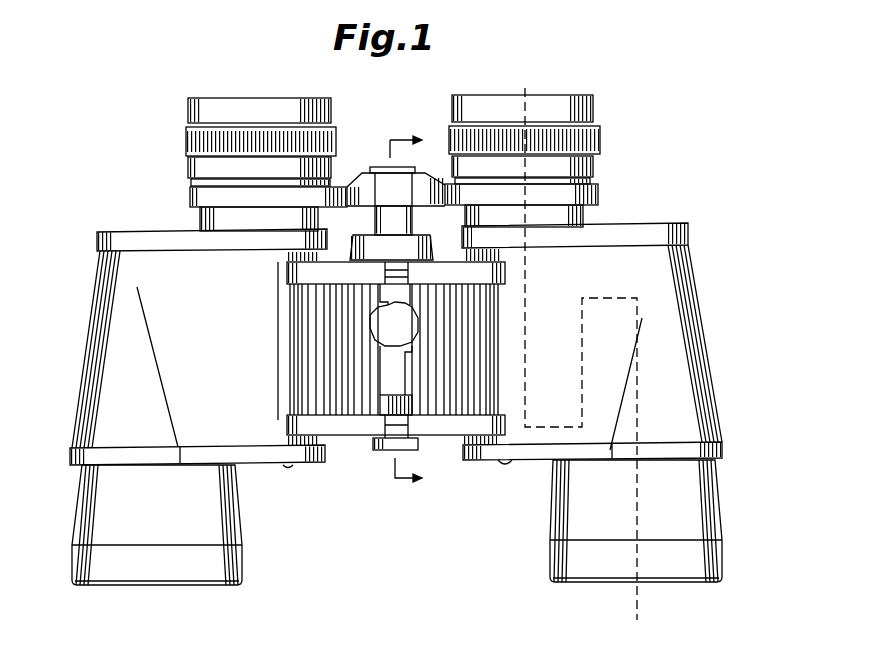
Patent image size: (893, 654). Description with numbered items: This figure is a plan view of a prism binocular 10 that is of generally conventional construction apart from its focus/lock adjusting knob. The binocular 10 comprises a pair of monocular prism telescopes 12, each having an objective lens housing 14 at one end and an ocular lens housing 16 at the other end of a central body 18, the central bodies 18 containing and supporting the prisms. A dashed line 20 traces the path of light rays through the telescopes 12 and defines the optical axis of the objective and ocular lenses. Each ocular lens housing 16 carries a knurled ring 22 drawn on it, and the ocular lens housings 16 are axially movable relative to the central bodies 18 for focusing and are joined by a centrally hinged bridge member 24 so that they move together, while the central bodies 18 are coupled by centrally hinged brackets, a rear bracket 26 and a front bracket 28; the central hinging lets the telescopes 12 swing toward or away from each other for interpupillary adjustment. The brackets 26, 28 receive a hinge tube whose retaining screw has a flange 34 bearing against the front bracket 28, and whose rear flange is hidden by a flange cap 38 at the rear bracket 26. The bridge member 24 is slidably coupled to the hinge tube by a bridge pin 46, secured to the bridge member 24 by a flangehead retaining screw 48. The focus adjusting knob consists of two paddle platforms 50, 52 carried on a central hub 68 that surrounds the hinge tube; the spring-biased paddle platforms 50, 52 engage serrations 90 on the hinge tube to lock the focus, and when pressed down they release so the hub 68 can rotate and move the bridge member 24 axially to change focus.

The prism binocular 10 is at (696, 201).
The monocular prism telescope 12 is at (82, 347).
The objective lens housing 14 is at (72, 556).
The ocular lens housing 16 is at (273, 98).
The central body 18 is at (150, 441).
The dashed line 20 is at (581, 344).
The eyepiece focusing ring 22 is at (186, 142).
The bridge member 24 is at (449, 183).
The rear bracket 26 is at (505, 268).
The front bracket 28 is at (484, 460).
The flange 34 is at (408, 450).
The flange cap 38 is at (406, 261).
The bridge pin 46 is at (412, 218).
The flangehead retaining screw 48 is at (375, 167).
The paddle platform 50 is at (318, 353).
The paddle platform 52 is at (473, 347).
The central hub 68 is at (392, 402).
The serrations 90 is at (392, 307).